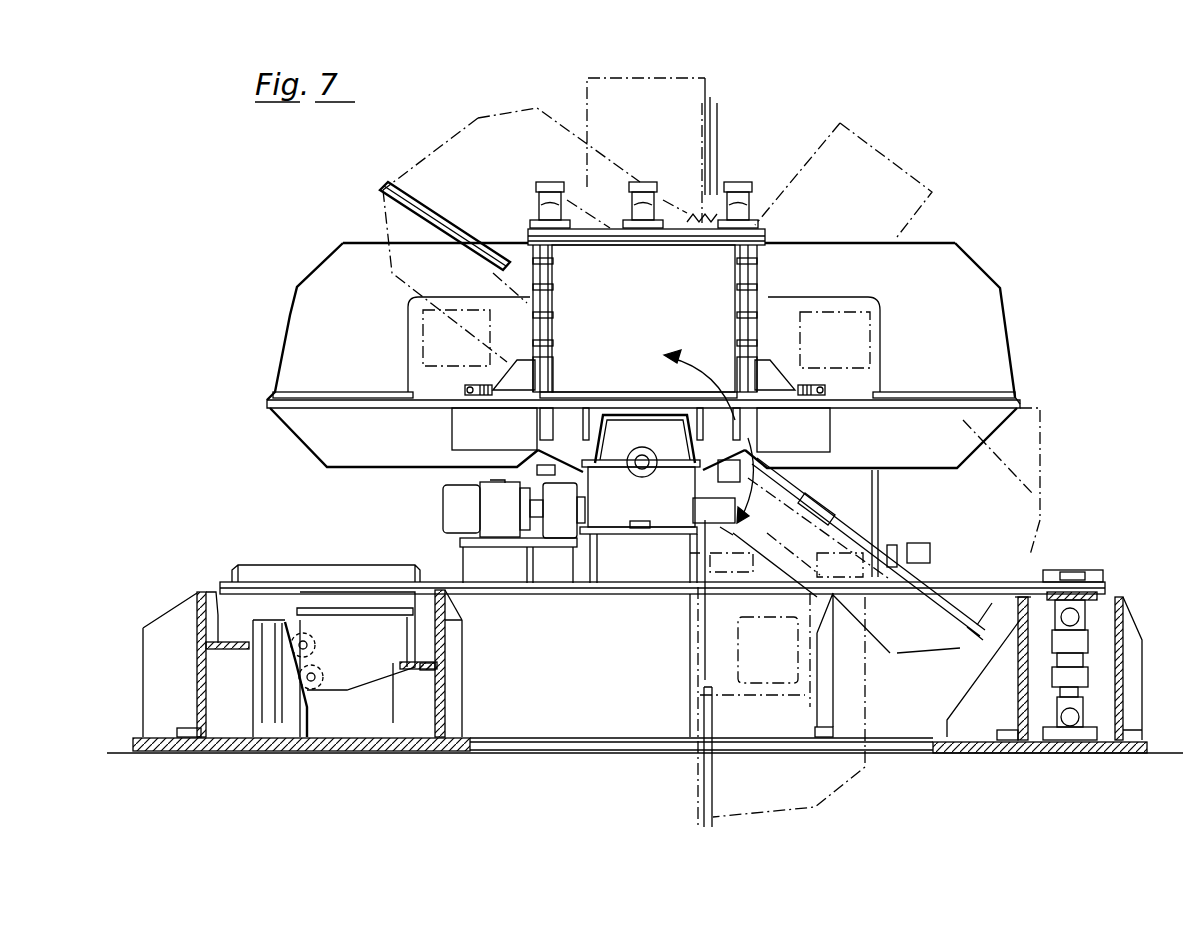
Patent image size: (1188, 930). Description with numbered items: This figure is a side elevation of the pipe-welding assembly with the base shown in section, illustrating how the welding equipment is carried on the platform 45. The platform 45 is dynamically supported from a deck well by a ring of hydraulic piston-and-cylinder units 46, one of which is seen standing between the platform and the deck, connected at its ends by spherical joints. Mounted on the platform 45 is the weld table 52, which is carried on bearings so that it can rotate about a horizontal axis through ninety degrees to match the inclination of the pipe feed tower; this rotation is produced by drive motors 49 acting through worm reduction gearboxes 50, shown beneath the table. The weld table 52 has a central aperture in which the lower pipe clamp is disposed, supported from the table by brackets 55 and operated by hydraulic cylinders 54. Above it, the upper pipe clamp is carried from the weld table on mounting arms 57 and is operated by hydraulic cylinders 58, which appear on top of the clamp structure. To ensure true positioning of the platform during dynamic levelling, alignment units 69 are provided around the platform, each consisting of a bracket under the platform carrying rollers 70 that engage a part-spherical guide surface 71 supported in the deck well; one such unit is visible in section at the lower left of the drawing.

The platform 45 is at (1090, 577).
The hydraulic piston-and-cylinder units 46 is at (1082, 638).
The drive motors 49 is at (457, 502).
The worm reduction gearboxes 50 is at (605, 523).
The weld table 52 is at (1020, 405).
The hydraulic cylinders 54 is at (730, 470).
The brackets 55 is at (768, 368).
The mounting arms 57 is at (452, 272).
The hydraulic cylinders 58 is at (645, 180).
The alignment units 69 is at (293, 704).
The rollers 70 is at (293, 650).
The part-spherical guide surface 71 is at (305, 663).